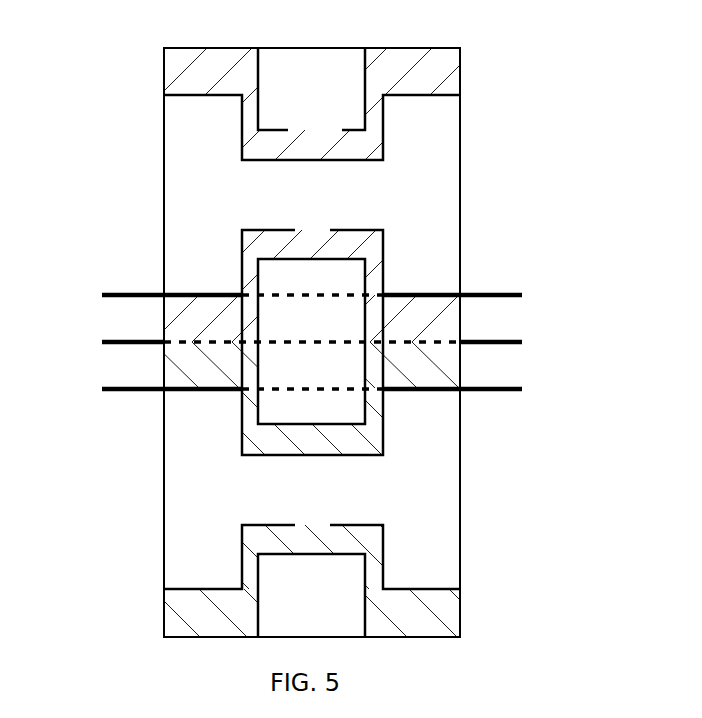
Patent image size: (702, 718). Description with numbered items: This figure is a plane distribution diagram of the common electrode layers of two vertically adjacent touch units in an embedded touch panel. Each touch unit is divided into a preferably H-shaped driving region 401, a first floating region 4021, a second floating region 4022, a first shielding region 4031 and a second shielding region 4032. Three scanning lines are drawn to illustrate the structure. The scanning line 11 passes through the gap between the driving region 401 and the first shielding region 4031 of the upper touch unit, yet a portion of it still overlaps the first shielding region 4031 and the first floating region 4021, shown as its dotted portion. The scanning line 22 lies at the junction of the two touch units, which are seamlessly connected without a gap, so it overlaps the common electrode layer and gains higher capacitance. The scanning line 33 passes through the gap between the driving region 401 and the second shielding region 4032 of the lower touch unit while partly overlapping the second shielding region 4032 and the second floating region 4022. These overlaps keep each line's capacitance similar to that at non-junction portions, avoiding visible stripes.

The scanning line 11 is at (283, 295).
The scanning line 22 is at (283, 343).
The scanning line 33 is at (283, 390).
The driving region 401 is at (312, 342).
The first floating region 4021 is at (312, 433).
The second floating region 4022 is at (311, 214).
The first shielding region 4031 is at (455, 318).
The second shielding region 4032 is at (456, 73).